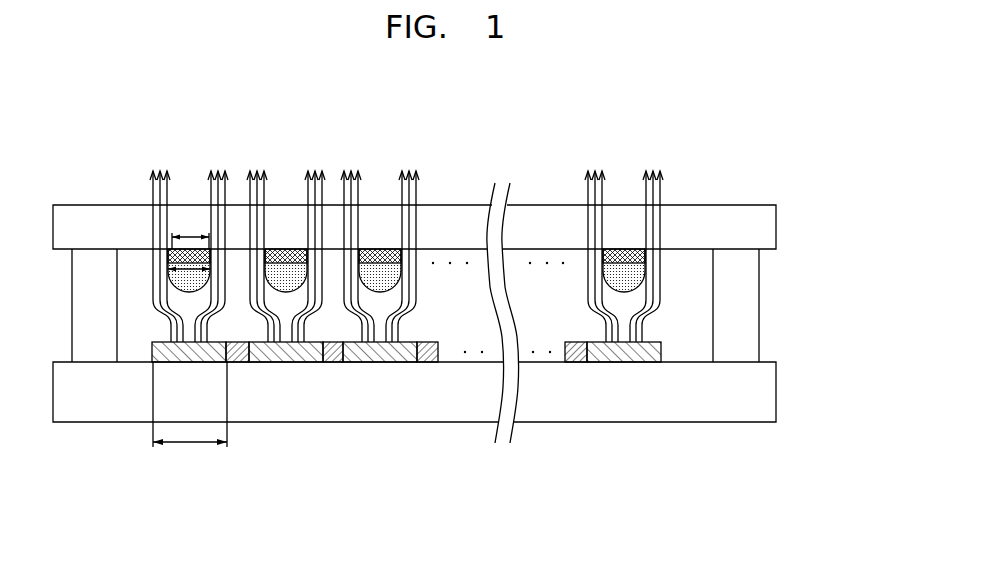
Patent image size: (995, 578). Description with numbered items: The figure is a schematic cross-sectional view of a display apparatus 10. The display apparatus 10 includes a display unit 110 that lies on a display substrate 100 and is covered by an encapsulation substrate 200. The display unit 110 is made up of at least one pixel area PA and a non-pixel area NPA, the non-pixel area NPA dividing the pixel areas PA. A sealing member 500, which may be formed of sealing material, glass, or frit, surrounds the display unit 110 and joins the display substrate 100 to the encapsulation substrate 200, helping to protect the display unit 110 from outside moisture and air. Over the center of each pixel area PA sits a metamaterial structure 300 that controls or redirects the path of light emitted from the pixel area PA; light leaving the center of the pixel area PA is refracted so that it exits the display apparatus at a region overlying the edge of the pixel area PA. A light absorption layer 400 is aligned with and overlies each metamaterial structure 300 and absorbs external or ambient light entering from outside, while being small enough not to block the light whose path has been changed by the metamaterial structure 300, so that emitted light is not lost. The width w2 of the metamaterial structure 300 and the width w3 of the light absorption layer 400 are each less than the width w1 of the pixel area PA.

The display apparatus 10 is at (763, 164).
The display substrate 100 is at (772, 391).
The display unit 110 is at (406, 426).
The encapsulation substrate 200 is at (771, 226).
The metamaterial structure 300 is at (628, 280).
The light absorption layer 400 is at (640, 257).
The sealing member 500 is at (755, 331).
The pixel area PA is at (283, 362).
The non-pixel area NPA is at (332, 362).
The width of pixel area w1 is at (190, 413).
The width of metamaterial structure w2 is at (189, 277).
The width of light absorption layer w3 is at (190, 232).